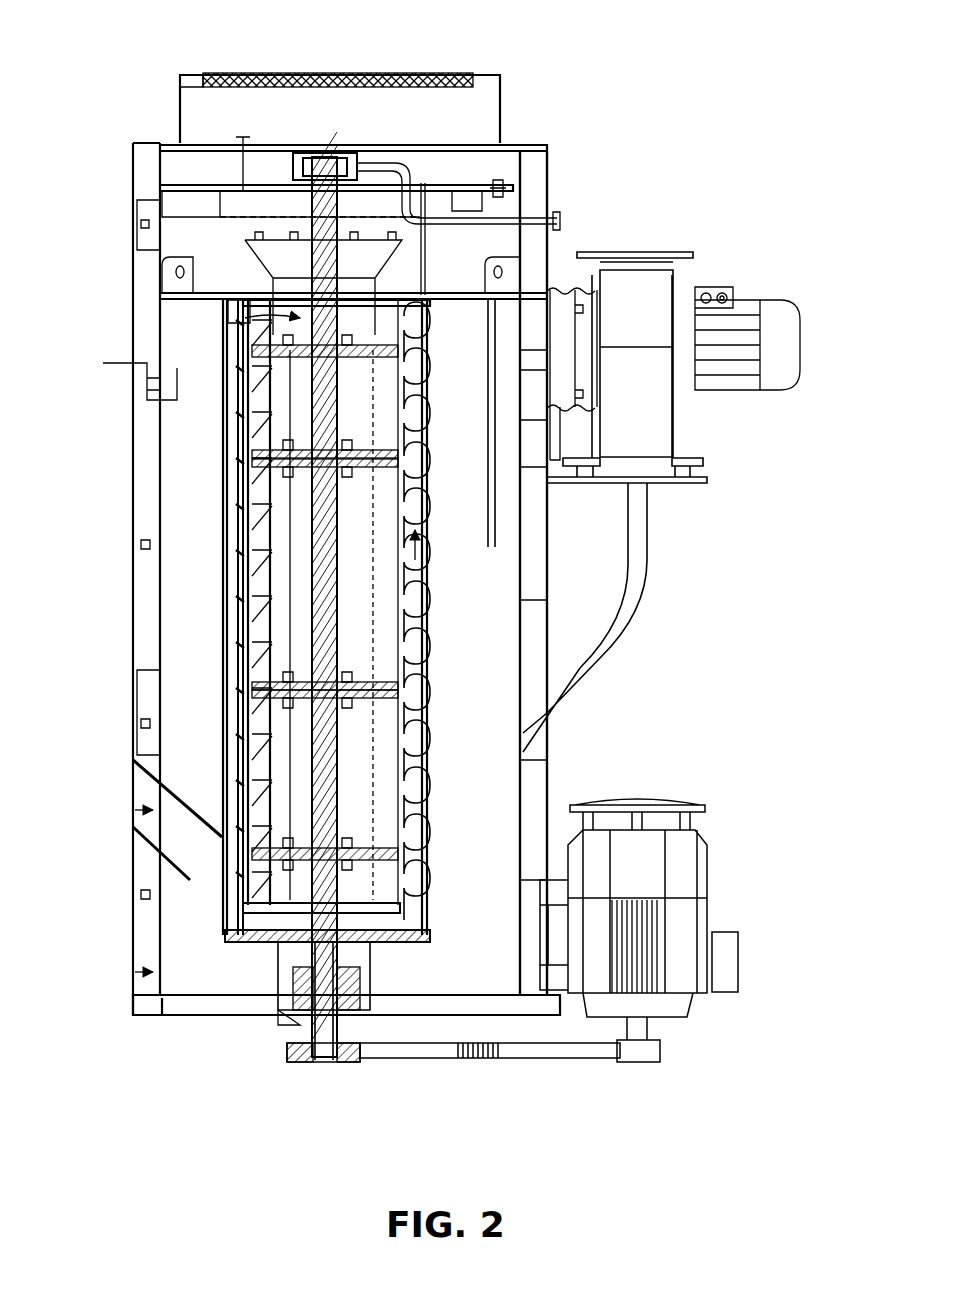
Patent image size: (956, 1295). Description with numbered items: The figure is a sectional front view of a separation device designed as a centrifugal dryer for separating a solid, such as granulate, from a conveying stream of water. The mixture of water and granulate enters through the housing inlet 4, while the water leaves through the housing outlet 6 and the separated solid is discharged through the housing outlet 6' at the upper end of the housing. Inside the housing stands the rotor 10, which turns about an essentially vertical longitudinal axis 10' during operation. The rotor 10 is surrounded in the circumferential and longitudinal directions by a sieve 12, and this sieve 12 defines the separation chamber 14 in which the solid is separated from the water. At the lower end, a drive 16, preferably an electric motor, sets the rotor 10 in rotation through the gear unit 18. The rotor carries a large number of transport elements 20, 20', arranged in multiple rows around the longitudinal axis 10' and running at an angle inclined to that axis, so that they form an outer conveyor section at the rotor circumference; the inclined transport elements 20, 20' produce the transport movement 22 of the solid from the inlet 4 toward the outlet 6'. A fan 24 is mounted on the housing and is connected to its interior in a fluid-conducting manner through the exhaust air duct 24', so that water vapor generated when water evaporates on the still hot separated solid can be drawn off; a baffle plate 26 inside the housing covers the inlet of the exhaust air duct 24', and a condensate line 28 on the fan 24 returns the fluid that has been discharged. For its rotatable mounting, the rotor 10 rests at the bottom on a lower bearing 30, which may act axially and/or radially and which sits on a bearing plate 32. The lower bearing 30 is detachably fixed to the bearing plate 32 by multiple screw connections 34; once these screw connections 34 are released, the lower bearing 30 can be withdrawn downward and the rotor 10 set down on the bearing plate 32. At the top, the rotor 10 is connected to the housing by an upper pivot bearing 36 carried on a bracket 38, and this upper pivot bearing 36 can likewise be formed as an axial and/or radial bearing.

The housing inlet 4 is at (132, 810).
The housing outlet 6 is at (111, 940).
The housing outlet 6' is at (188, 326).
The rotor 10 is at (176, 602).
The longitudinal axis 10' is at (199, 617).
The sieve 12 is at (428, 787).
The separation chamber 14 is at (415, 665).
The drive 16 is at (690, 872).
The gear unit 18 is at (573, 1058).
The transport element 20 is at (449, 611).
The transport element 20' is at (168, 510).
The transport movement 22 is at (405, 578).
The fan 24 is at (673, 363).
The exhaust air duct 24' is at (573, 324).
The baffle plate 26 is at (497, 490).
The condensate line 28 is at (627, 622).
The lower bearing 30 is at (297, 990).
The bearing plate 32 is at (237, 942).
The screw connections 34 is at (360, 963).
The upper pivot bearing 36 is at (280, 158).
The bracket 38 is at (423, 185).